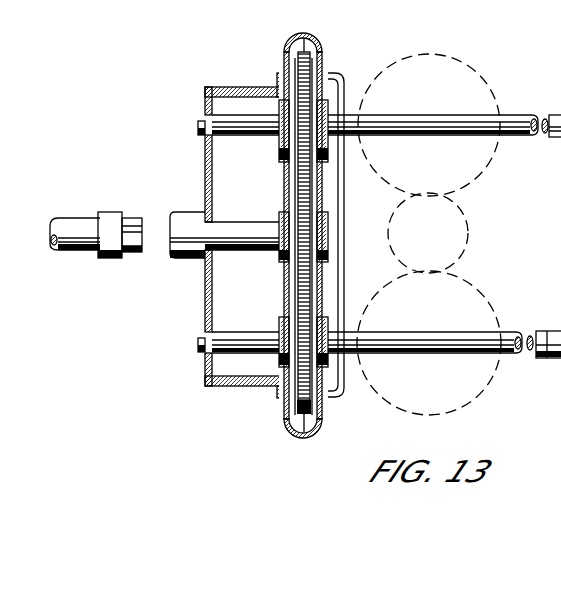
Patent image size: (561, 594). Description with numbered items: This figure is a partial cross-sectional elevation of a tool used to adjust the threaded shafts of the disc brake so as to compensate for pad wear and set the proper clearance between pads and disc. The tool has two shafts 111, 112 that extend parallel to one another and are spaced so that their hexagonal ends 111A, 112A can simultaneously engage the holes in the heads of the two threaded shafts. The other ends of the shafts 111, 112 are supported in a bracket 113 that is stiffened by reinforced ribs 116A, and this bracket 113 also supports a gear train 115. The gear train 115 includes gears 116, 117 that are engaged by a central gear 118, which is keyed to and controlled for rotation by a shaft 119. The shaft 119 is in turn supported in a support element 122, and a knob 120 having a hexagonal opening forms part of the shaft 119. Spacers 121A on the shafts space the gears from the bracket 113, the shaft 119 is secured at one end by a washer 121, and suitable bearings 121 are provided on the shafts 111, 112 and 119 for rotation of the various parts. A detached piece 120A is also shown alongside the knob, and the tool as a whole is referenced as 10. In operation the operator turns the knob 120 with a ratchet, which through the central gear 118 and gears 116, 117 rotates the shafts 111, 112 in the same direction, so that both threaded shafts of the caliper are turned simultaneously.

The transmission assembly 10 is at (555, 210).
The shaft 111 is at (450, 142).
The hexagonal end 111A is at (560, 105).
The shaft 112 is at (442, 358).
The hexagonal end 112A is at (546, 363).
The bracket 113 is at (313, 445).
The gear train 115 is at (296, 70).
The gear 116 is at (310, 42).
The reinforced ribs 116A is at (341, 73).
The gear 117 is at (300, 408).
The central gear 118 is at (322, 213).
The shaft 119 is at (230, 228).
The knob 120 is at (190, 262).
The detached shaft piece 120A is at (112, 212).
The bearings 121 is at (327, 315).
The spacers 121A is at (292, 222).
The support element 122 is at (205, 372).